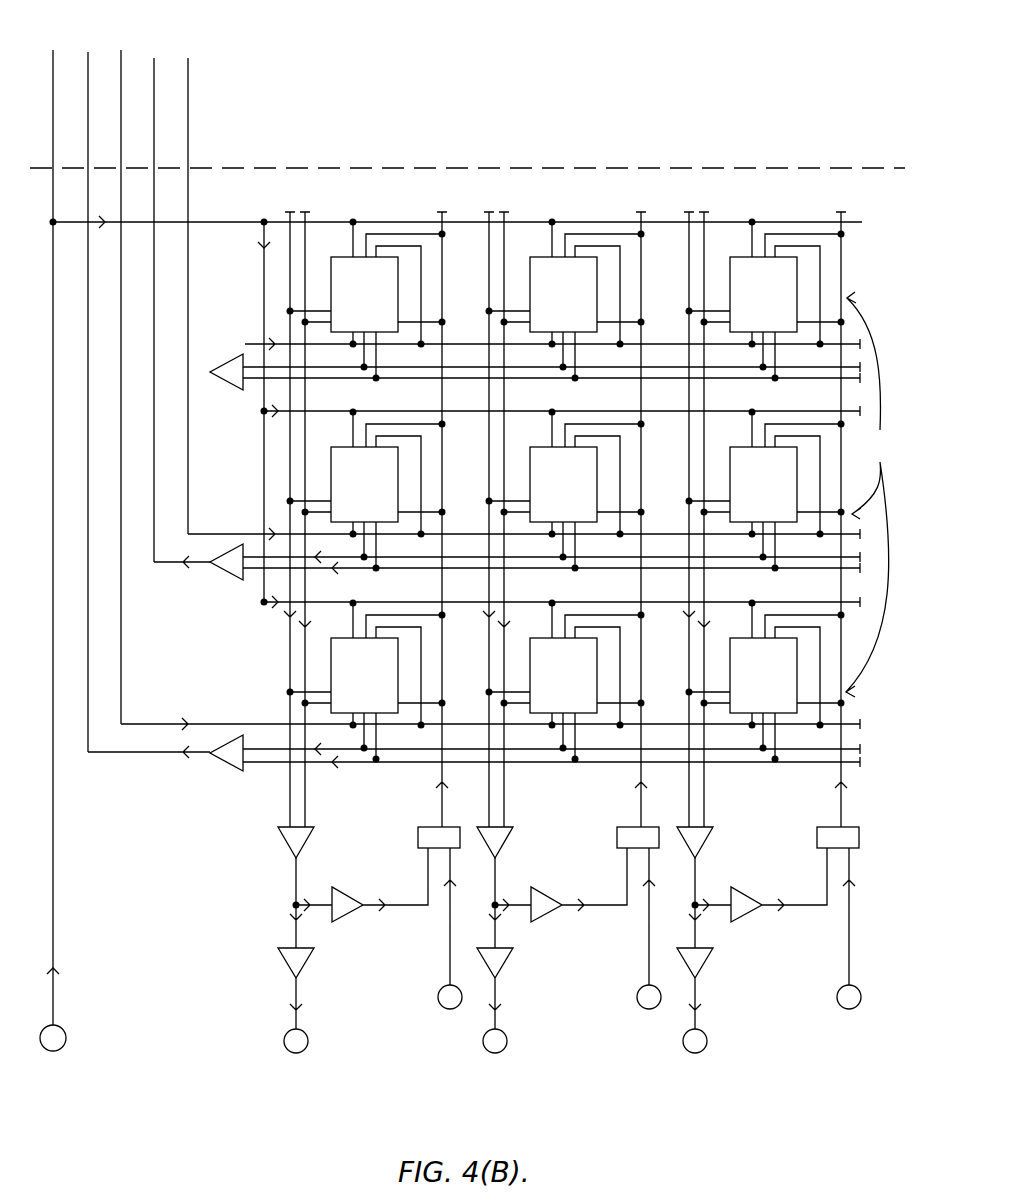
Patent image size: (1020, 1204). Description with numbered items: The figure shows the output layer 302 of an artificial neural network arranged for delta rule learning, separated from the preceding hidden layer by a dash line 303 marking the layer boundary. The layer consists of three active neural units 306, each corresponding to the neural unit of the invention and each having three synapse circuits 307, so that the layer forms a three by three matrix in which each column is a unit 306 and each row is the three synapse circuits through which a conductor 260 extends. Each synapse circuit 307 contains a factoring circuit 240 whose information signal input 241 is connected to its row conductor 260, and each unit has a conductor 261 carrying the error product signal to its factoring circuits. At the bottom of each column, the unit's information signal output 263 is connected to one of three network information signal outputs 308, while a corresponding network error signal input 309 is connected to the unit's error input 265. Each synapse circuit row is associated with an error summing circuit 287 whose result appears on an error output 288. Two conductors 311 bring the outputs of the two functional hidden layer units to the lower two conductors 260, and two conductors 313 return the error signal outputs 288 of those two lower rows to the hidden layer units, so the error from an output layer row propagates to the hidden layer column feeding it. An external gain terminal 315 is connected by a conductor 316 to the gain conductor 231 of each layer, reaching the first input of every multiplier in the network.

The factoring circuit 240 is at (350, 302).
The information signal input 241 is at (748, 337).
The gain conductor 231 is at (262, 289).
The information signal input 260 is at (210, 530).
The conductor 261 is at (446, 792).
The information signal output 263 is at (292, 1003).
The error signal input 265 is at (450, 923).
The error summing circuit 287 is at (225, 592).
The error output 288 is at (184, 574).
The output layer 302 is at (868, 289).
The dash line 303 is at (833, 167).
The neural unit 306 is at (381, 126).
The synapse circuit 307 is at (568, 529).
The information signal output 308 is at (290, 1053).
The error signal input 309 is at (441, 1008).
The conductor 311 is at (121, 75).
The conductor 313 is at (88, 131).
The external gain terminal 315 is at (58, 1050).
The conductor 316 is at (53, 67).